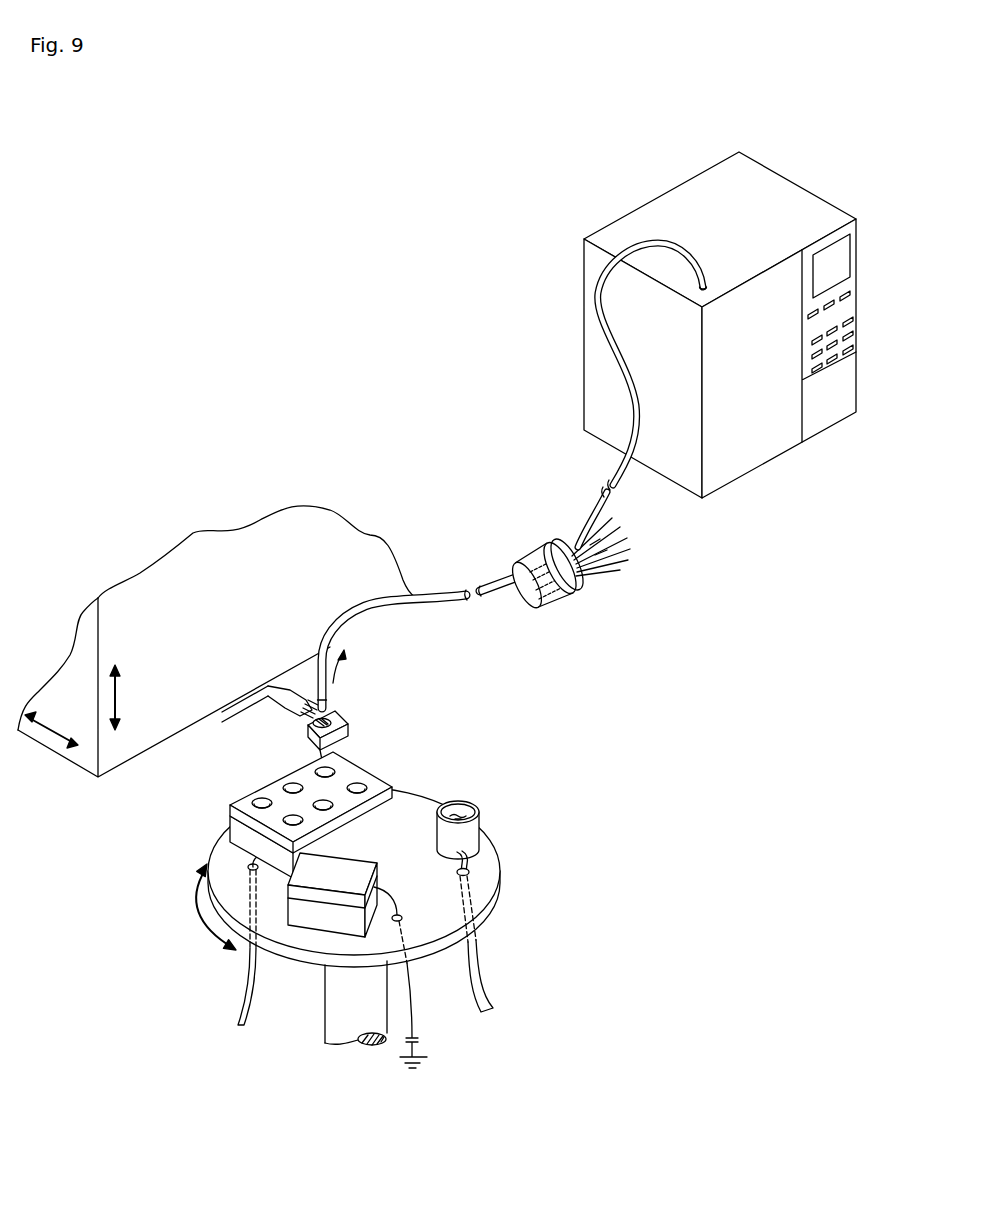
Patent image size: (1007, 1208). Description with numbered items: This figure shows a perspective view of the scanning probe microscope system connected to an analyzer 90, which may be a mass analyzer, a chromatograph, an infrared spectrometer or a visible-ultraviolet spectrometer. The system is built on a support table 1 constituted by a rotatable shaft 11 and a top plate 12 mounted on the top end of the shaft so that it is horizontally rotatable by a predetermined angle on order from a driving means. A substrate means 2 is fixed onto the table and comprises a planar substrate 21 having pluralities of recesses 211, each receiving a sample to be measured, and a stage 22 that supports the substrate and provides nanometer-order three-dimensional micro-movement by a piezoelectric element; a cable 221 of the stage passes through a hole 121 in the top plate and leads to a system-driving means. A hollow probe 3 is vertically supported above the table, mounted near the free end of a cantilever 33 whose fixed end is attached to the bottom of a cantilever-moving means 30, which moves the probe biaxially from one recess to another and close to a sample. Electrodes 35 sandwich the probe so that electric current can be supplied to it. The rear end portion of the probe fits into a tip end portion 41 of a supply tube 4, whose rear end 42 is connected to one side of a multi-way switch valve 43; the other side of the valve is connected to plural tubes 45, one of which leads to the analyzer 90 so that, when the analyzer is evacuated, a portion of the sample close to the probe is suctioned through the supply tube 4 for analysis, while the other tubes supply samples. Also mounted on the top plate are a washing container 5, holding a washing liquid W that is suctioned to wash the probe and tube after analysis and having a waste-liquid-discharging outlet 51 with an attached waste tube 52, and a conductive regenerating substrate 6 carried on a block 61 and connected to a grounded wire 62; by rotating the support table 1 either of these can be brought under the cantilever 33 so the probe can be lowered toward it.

The analyzer 90 is at (699, 190).
The tubes 45 is at (563, 542).
The rear end of the supply tube 42 is at (512, 567).
The multi-way switch valve 43 is at (552, 598).
The supply tube 4 is at (447, 607).
The tip end portion of the supply tube 41 is at (330, 698).
The electrodes 35 is at (302, 718).
The cantilever 33 is at (350, 723).
The hollow probe 3 is at (333, 760).
The cantilever-moving means 30 is at (117, 762).
The substrate means 2 is at (283, 812).
The recesses 211 is at (242, 794).
The substrate 21 is at (284, 802).
The stage 22 is at (230, 836).
The hole 121 is at (247, 867).
The washing container 5 is at (457, 800).
The washing liquid W is at (465, 812).
The waste-liquid-discharging outlet 51 is at (468, 843).
The waste tube 52 is at (472, 860).
The top plate 12 is at (493, 900).
The regenerating substrate 6 is at (324, 929).
The block 61 is at (323, 920).
The cable 221 is at (252, 993).
The rotatable shaft 11 is at (330, 1025).
The grounded wire 62 is at (415, 1007).
The support table 1 is at (496, 946).